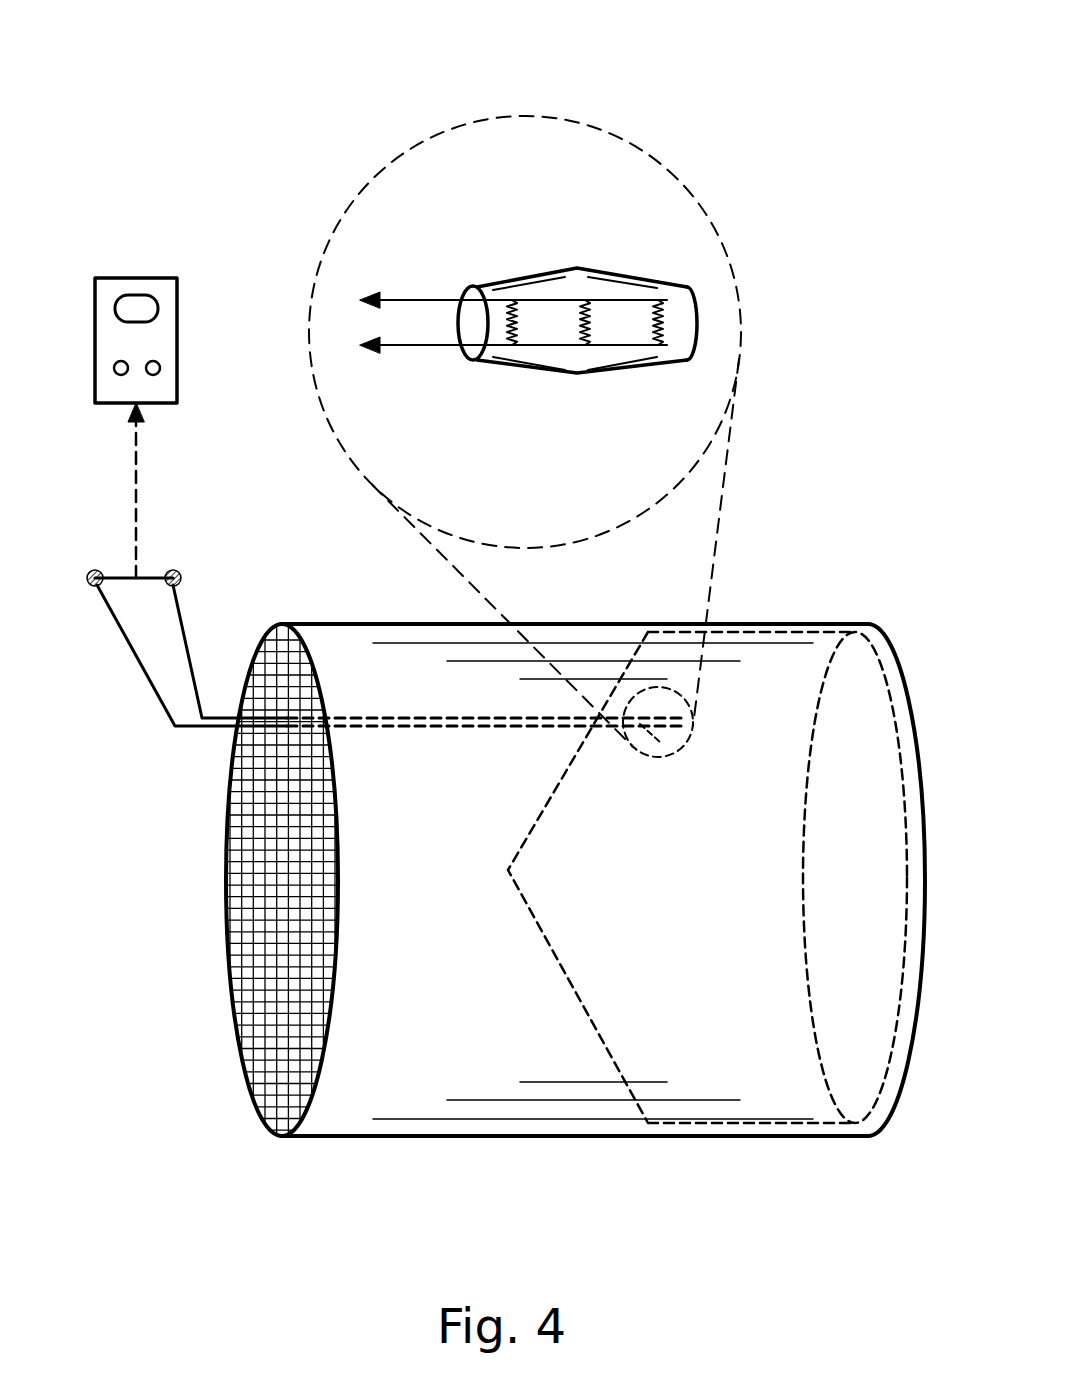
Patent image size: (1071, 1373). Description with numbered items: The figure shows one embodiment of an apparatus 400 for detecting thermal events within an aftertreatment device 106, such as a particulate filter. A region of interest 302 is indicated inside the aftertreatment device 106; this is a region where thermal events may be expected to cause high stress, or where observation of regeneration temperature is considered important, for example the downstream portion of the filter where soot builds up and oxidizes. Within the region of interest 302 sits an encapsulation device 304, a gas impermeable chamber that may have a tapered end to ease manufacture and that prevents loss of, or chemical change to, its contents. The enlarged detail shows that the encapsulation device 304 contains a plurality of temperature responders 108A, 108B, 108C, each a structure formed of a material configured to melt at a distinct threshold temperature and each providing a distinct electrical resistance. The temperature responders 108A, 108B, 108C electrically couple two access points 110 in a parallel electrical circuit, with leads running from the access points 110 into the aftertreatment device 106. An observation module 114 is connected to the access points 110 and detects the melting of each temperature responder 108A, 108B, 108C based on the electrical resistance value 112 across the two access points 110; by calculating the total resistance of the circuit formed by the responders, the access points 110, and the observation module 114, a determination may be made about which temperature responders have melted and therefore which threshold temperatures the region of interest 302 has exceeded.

The apparatus 400 is at (118, 63).
The aftertreatment device 106 is at (608, 1138).
The temperature responder 108A is at (512, 300).
The temperature responder 108B is at (585, 300).
The temperature responder 108C is at (658, 300).
The access points 110 is at (182, 578).
The electrical resistance value 112 is at (142, 481).
The observation module 114 is at (133, 278).
The region of interest 302 is at (755, 1125).
The encapsulation device 304 is at (650, 758).